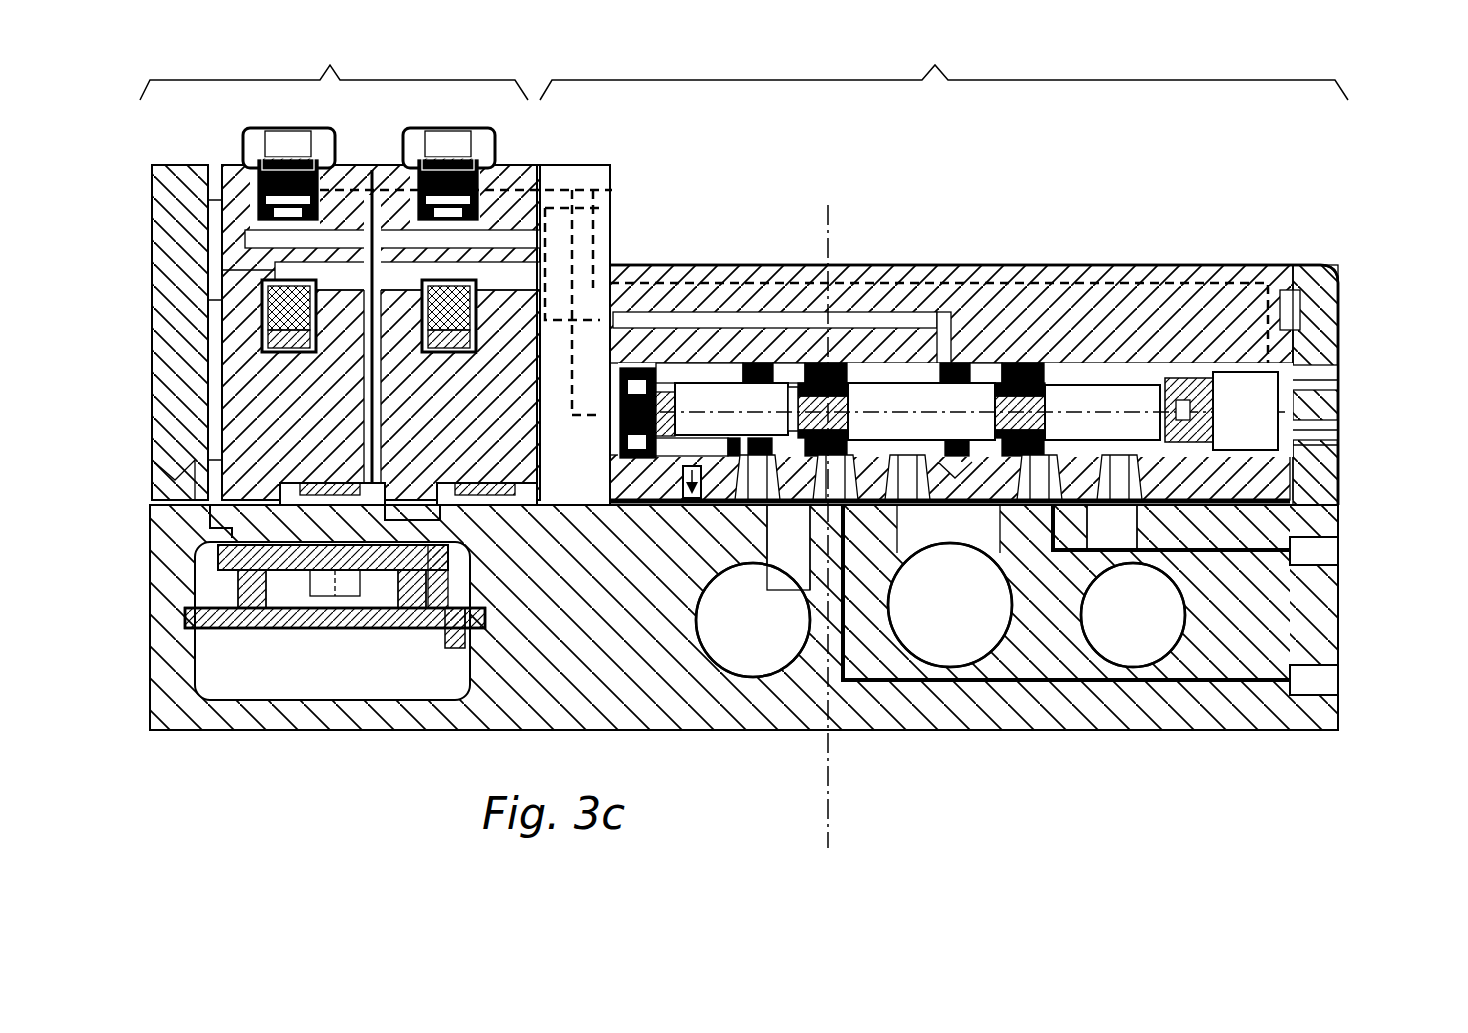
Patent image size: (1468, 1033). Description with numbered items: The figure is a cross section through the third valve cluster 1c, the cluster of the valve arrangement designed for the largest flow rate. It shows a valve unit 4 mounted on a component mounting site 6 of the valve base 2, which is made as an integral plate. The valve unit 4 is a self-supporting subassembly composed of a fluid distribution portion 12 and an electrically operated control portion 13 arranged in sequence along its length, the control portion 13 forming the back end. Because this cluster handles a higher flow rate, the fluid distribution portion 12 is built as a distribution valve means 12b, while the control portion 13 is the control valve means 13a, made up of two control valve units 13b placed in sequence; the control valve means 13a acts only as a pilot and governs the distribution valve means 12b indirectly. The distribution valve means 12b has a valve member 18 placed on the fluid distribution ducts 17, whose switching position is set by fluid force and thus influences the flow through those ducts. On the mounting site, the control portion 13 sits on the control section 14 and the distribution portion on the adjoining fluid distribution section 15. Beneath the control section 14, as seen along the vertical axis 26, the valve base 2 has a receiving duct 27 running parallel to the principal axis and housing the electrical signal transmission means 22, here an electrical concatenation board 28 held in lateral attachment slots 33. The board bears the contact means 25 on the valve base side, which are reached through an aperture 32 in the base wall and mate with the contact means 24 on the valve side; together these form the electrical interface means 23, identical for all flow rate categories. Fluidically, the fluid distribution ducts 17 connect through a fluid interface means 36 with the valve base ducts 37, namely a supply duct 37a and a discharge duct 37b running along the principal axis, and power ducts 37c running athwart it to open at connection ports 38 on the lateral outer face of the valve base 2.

The third valve cluster 1c is at (1320, 235).
The valve base 2 is at (1308, 740).
The valve unit 4 is at (1356, 300).
The component mounting site 6 is at (572, 498).
The fluid distribution portion 12 is at (944, 266).
The distribution valve means 12b is at (974, 266).
The control portion 13 is at (334, 264).
The control valve means 13a is at (381, 264).
The control valve unit 13b is at (250, 398).
The control section 14 is at (490, 478).
The fluid distribution section 15 is at (696, 462).
The fluid distribution ducts 17 is at (1085, 368).
The valve member 18 is at (1130, 398).
The electrical signal transmission means 22 is at (306, 640).
The electrical interface means 23 is at (210, 543).
The contact means on the valve side 24 is at (258, 520).
The contact means on the valve base side 25 is at (332, 589).
The vertical axis 26 is at (828, 828).
The receiving duct 27 is at (392, 690).
The electrical concatenation board 28 is at (352, 630).
The aperture 32 is at (207, 522).
The lateral attachment slot 33 is at (188, 622).
The fluid interface means 36 is at (900, 508).
The valve base ducts 37 is at (962, 669).
The supply duct 37a is at (962, 667).
The discharge duct 37b is at (752, 672).
The power duct 37c is at (1226, 682).
The connection port 38 is at (1340, 552).